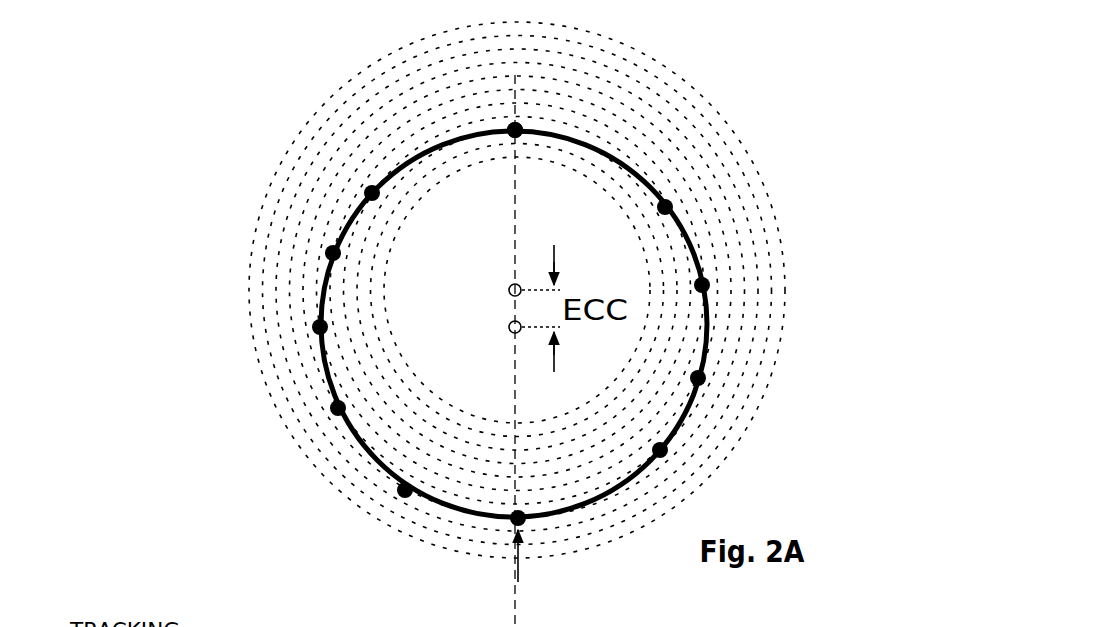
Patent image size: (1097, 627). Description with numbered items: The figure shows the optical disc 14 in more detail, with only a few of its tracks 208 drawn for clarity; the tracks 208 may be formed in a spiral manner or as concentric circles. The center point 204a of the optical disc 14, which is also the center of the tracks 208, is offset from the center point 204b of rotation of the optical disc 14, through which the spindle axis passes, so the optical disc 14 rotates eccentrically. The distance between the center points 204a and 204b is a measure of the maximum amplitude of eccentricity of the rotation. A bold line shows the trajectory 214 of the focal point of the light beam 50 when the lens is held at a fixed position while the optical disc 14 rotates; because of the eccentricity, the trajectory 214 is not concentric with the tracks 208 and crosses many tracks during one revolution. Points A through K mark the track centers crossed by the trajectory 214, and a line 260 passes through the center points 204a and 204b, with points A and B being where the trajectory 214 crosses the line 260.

The optical disc 14 is at (403, 284).
The tracks 208 is at (343, 103).
The trajectory 214 is at (574, 327).
The light beam 50 is at (515, 130).
The line 260 is at (506, 190).
The center point of the optical disc 204a is at (290, 234).
The center point of rotation of the optical disc 204b is at (303, 418).